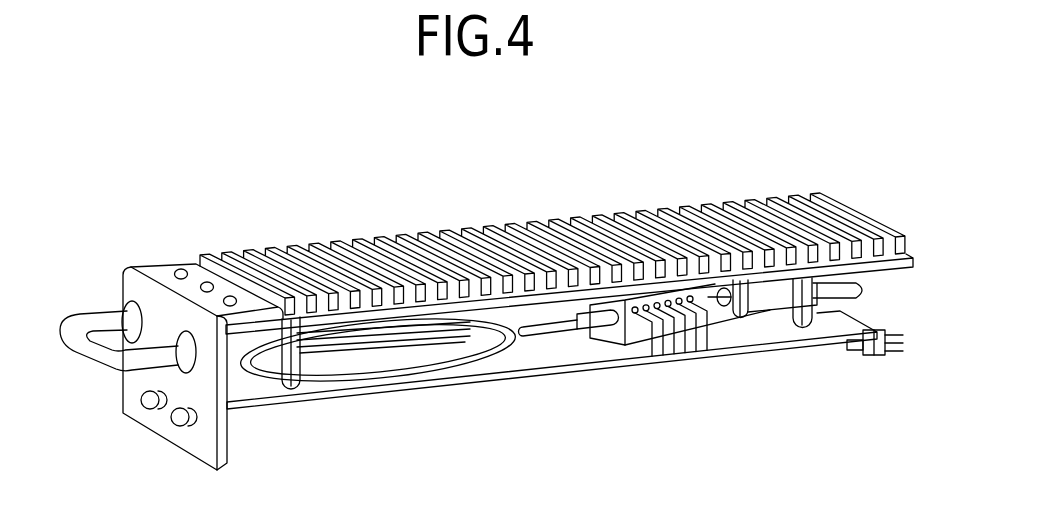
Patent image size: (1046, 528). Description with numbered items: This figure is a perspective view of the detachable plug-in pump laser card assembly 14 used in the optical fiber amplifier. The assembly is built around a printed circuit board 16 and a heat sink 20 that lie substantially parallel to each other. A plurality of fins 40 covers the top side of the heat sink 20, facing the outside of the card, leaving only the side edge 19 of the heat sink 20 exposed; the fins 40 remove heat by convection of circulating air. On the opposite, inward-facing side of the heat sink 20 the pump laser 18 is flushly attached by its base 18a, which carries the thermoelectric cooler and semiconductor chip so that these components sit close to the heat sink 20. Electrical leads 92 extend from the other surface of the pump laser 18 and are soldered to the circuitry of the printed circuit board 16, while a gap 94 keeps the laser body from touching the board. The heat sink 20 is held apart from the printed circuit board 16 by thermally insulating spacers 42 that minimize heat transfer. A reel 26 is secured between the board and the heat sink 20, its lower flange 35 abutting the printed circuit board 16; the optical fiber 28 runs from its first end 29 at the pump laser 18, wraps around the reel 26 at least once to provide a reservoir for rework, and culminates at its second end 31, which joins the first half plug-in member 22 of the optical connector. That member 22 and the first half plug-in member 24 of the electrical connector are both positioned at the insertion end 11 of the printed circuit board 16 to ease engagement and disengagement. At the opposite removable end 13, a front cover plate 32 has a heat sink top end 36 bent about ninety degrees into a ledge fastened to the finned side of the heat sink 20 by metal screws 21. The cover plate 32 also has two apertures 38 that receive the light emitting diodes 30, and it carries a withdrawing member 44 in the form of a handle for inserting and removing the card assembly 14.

The detachable plug-in pump laser card assembly 14 is at (497, 291).
The heat sink 20 is at (563, 232).
The side edge of the heat sink 19 is at (913, 257).
The fins 40 is at (423, 236).
The removable end 13 is at (169, 346).
The heat sink top end 36 is at (193, 268).
The metal screws 21 is at (179, 268).
The front cover plate 32 is at (146, 329).
The withdrawing member 44 is at (78, 312).
The light emitting diodes 30 is at (149, 404).
The apertures 38 is at (186, 427).
The insertion end 11 is at (858, 305).
The thermally insulating spacers 42 is at (290, 388).
The reel 26 is at (381, 386).
The optical fiber 28 is at (383, 342).
The lower flange 35 is at (357, 372).
The printed circuit board 16 is at (565, 266).
The first end 29 is at (533, 327).
The pump laser 18 is at (676, 361).
The base 18a is at (620, 318).
The gap 94 is at (637, 349).
The electrical leads 92 is at (664, 323).
The second end 31 is at (716, 304).
The first half plug-in member of the optical connector 22 is at (768, 307).
The first half plug-in member of the electrical connector 24 is at (900, 356).